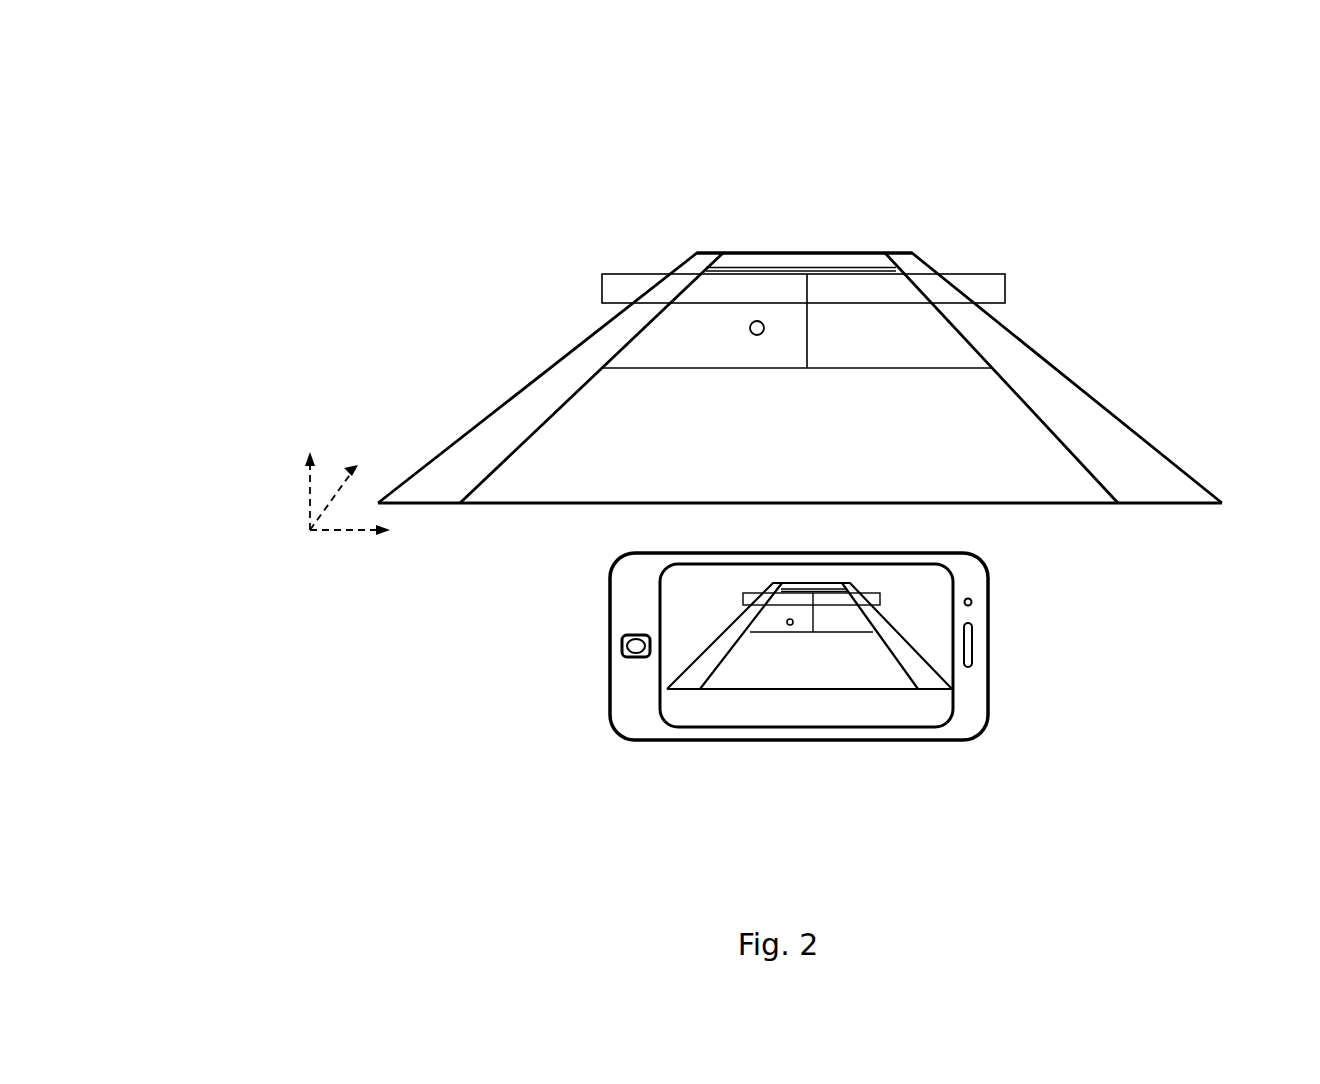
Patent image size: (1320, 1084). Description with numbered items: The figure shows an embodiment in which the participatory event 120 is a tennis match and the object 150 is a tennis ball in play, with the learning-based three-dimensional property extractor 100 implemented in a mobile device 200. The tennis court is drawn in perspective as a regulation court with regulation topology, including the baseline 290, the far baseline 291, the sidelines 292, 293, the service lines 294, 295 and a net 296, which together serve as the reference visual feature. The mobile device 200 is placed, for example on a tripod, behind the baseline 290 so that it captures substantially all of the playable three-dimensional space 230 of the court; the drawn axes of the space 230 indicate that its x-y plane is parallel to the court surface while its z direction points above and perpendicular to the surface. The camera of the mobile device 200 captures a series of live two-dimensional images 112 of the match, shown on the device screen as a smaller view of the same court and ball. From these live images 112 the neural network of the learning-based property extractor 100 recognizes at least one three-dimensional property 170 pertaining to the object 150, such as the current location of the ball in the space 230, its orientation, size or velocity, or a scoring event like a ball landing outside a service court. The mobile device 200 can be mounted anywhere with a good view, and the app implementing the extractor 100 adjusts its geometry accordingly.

The participatory event 120 is at (948, 118).
The object 150 is at (745, 317).
The 3D space 230 is at (313, 417).
The baseline 290 is at (1050, 505).
The baseline 291 is at (822, 253).
The sideline 292 is at (480, 483).
The sideline 293 is at (1047, 418).
The service line 294 is at (658, 357).
The service line 295 is at (871, 266).
The net 296 is at (638, 267).
The mobile device 200 is at (1035, 631).
The learning-based 3D property extractor 100 is at (635, 726).
The live 2D images 112 is at (678, 609).
The 3D property 170 is at (855, 742).